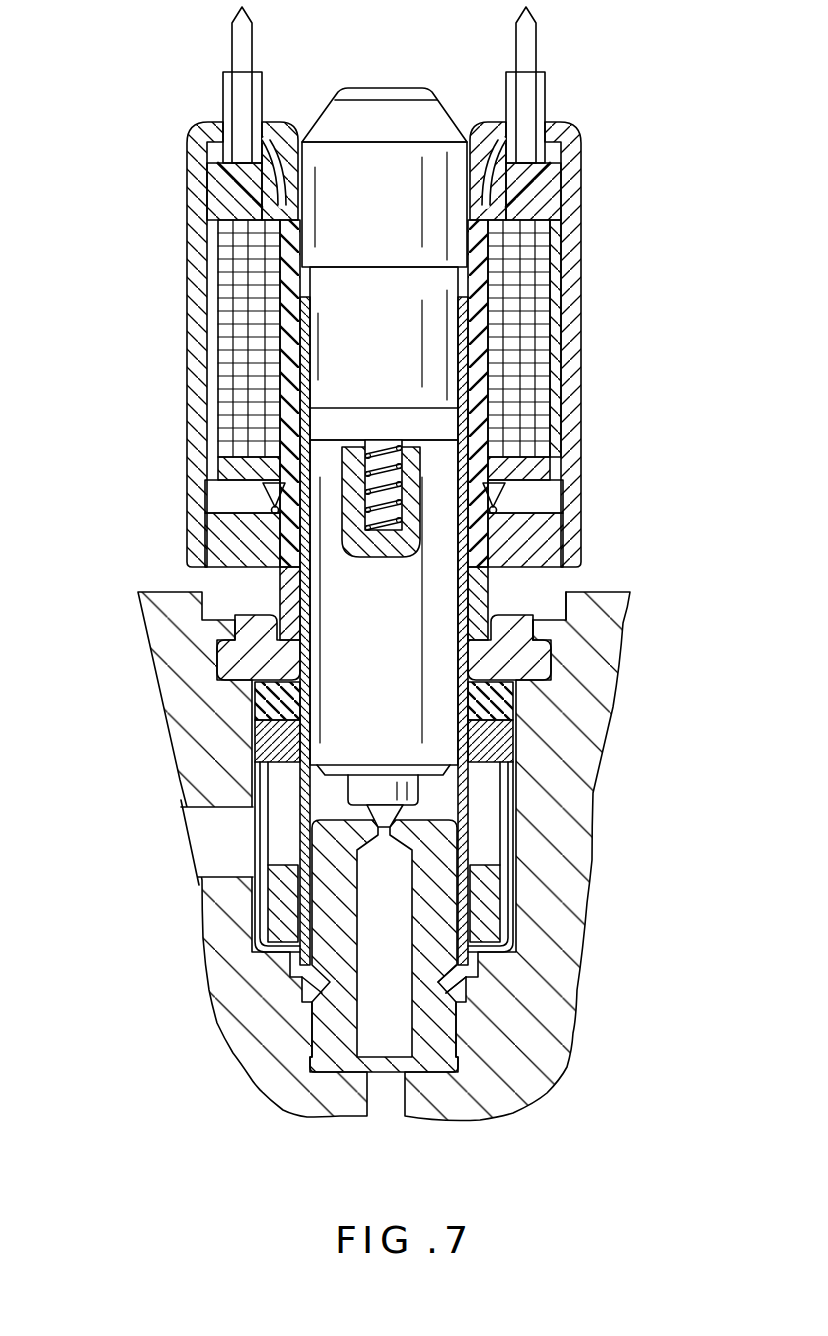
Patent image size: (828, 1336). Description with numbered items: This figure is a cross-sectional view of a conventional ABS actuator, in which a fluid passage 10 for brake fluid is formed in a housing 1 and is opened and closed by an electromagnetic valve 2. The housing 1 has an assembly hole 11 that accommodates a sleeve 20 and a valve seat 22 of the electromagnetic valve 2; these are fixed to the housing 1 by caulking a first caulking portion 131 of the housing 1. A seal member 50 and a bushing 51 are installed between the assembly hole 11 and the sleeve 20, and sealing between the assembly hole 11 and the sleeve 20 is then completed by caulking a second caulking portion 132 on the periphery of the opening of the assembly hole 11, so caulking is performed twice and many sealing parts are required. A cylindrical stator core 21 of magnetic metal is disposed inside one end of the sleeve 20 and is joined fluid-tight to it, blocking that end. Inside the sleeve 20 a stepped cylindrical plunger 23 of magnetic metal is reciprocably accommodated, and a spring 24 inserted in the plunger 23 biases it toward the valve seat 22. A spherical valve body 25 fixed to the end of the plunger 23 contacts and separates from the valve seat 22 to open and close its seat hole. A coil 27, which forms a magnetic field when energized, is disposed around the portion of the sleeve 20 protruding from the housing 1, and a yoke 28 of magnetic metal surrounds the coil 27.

The housing 1 is at (192, 993).
The electromagnetic valve 2 is at (177, 337).
The fluid passage 10 is at (210, 843).
The assembly hole 11 is at (510, 827).
The sleeve 20 is at (472, 490).
The stator core 21 is at (395, 216).
The valve seat 22 is at (447, 945).
The plunger 23 is at (365, 580).
The spring 24 is at (250, 463).
The spherical valve body 25 is at (380, 817).
The coil 27 is at (527, 325).
The yoke 28 is at (572, 270).
The seal member 50 is at (265, 738).
The bushing 51 is at (223, 658).
The first caulking portion 131 is at (460, 990).
The second caulking portion 132 is at (537, 622).